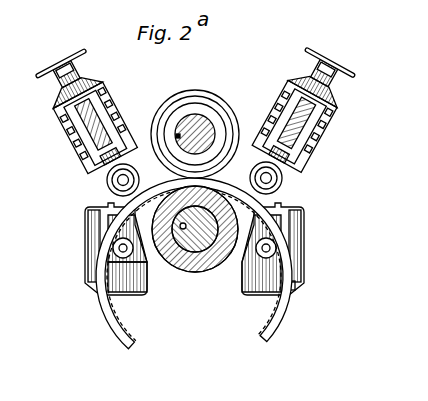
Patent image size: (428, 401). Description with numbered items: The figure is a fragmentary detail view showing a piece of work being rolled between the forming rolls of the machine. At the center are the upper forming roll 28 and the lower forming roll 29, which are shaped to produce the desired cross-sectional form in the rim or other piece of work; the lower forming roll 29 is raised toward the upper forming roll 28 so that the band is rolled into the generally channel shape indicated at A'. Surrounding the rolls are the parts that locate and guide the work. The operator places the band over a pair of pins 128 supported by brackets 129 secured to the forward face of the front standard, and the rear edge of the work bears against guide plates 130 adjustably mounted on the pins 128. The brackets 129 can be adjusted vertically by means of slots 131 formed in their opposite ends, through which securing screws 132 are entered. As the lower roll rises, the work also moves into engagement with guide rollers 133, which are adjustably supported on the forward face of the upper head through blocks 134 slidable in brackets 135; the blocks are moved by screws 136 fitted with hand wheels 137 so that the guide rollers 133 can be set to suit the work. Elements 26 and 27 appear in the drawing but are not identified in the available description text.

The guide ring 26 is at (223, 100).
The drum 27 is at (198, 271).
The upper forming roll 28 is at (199, 118).
The lower forming roll 29 is at (173, 270).
The pins 128 is at (113, 248).
The brackets 129 is at (85, 215).
The guide plates 130 is at (132, 290).
The slots 131 is at (286, 207).
The securing screws 132 is at (296, 288).
The guide rollers 133 is at (137, 163).
The blocks 134 is at (85, 138).
The brackets 135 is at (112, 59).
The screws 136 is at (334, 65).
The hand wheels 137 is at (60, 60).
The channel-shaped work A' is at (317, 179).